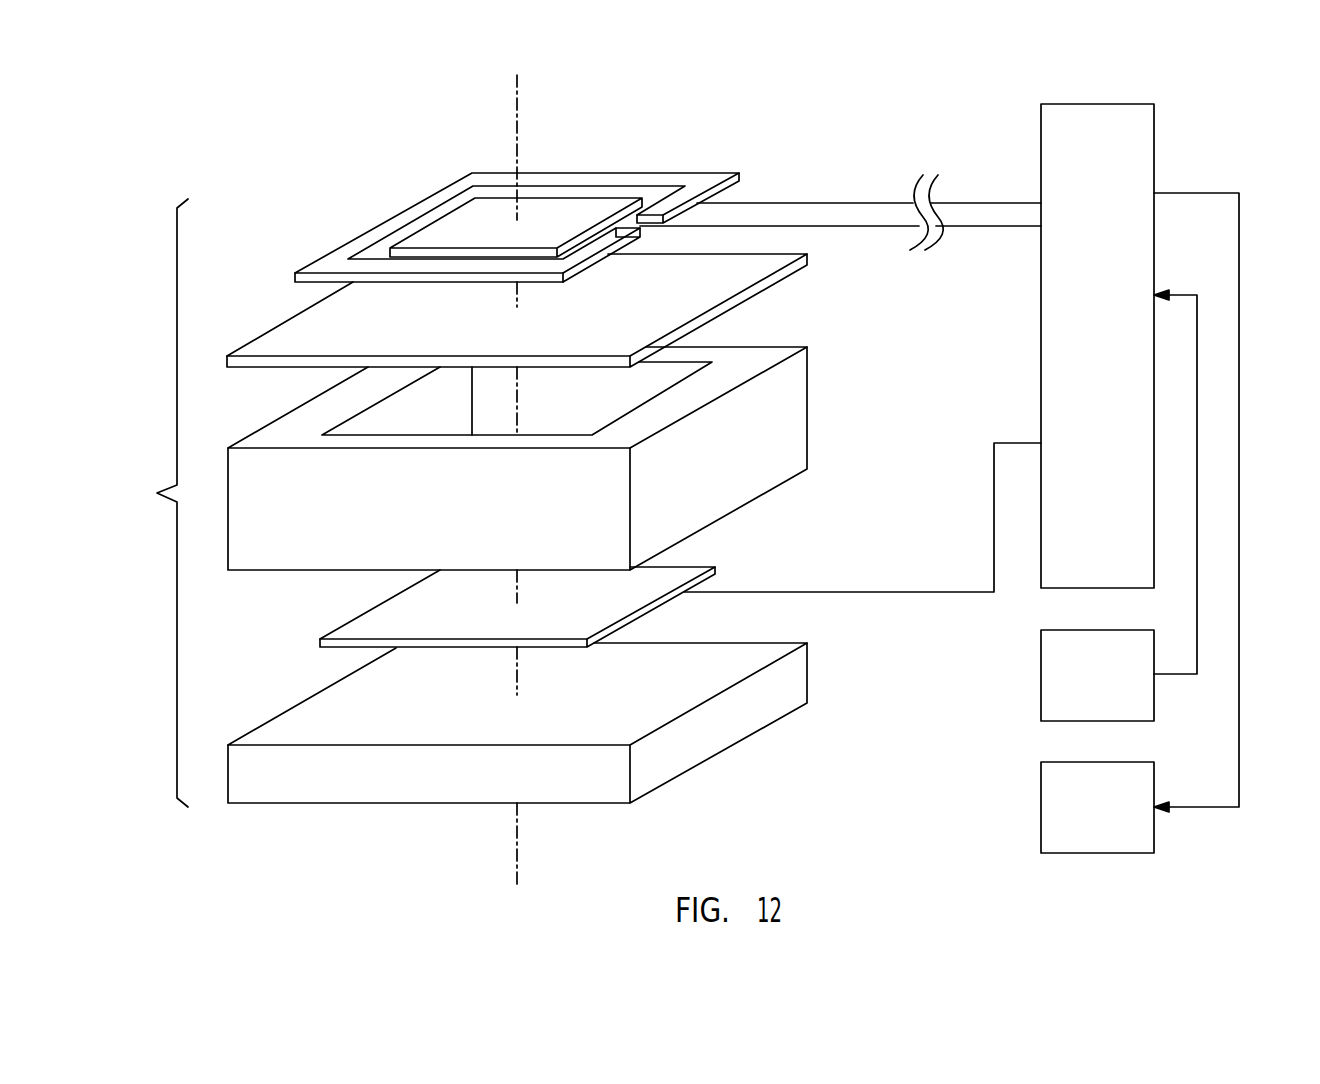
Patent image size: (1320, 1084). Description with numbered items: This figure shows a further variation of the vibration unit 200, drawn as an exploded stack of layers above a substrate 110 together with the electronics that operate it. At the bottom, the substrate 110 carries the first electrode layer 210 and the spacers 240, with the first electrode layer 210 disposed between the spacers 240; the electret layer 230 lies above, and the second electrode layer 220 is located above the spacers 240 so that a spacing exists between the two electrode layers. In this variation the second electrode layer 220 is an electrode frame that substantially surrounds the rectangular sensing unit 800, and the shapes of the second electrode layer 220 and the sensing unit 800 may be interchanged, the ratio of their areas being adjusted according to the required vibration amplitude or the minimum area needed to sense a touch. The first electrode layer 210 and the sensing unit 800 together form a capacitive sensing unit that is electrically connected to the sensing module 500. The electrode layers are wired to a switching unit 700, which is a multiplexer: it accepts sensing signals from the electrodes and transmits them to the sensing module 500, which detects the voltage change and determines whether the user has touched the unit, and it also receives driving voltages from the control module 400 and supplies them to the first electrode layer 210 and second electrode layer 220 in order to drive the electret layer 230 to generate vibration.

The vibration unit 200 is at (468, 470).
The second electrode layer 220 is at (698, 182).
The sensing unit 800 is at (543, 207).
The electret layer 230 is at (742, 265).
The spacers 240 is at (740, 357).
The first electrode layer 210 is at (669, 582).
The substrate 110 is at (742, 653).
The switching unit 700 is at (1097, 346).
The control module 400 is at (1113, 687).
The sensing module 500 is at (1113, 820).